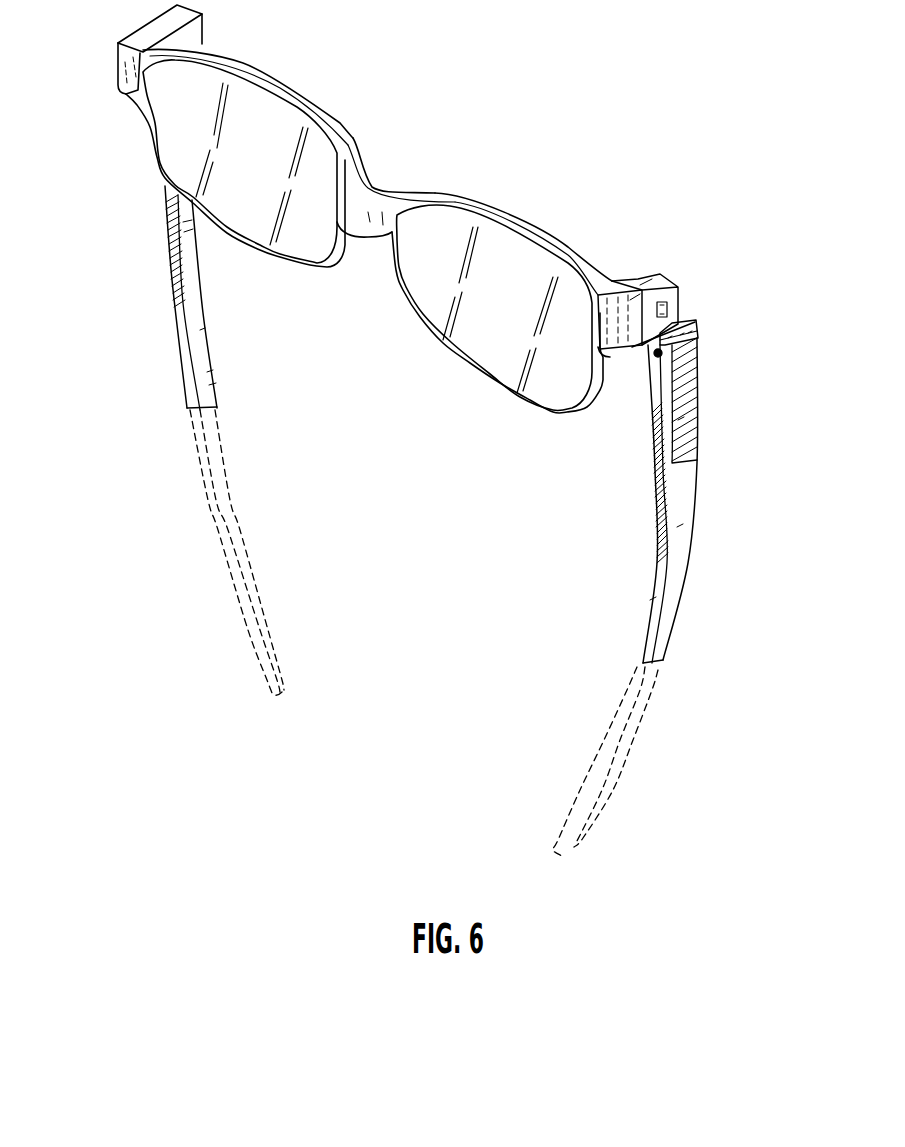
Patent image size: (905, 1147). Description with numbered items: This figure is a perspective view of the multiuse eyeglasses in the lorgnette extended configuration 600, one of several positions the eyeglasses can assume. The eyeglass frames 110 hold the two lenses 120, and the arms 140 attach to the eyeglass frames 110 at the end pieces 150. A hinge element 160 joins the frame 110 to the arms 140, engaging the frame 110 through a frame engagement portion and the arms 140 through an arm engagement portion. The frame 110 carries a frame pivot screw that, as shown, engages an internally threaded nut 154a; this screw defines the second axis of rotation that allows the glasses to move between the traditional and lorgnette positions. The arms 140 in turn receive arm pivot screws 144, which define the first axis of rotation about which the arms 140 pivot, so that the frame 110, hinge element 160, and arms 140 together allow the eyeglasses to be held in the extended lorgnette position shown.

The lorgnette extended configuration 600 is at (345, 117).
The eyeglass frames 110 is at (557, 250).
The lenses 120 is at (272, 184).
The end pieces 150 is at (640, 290).
The internally threaded nut 154a is at (668, 317).
The hinge element 160 is at (700, 332).
The arm pivot screws 144 is at (650, 356).
The arms 140 is at (657, 580).